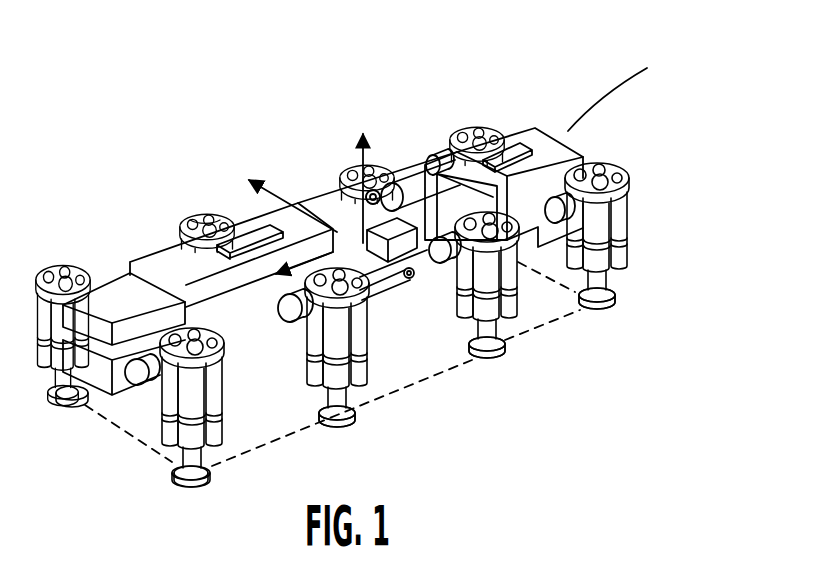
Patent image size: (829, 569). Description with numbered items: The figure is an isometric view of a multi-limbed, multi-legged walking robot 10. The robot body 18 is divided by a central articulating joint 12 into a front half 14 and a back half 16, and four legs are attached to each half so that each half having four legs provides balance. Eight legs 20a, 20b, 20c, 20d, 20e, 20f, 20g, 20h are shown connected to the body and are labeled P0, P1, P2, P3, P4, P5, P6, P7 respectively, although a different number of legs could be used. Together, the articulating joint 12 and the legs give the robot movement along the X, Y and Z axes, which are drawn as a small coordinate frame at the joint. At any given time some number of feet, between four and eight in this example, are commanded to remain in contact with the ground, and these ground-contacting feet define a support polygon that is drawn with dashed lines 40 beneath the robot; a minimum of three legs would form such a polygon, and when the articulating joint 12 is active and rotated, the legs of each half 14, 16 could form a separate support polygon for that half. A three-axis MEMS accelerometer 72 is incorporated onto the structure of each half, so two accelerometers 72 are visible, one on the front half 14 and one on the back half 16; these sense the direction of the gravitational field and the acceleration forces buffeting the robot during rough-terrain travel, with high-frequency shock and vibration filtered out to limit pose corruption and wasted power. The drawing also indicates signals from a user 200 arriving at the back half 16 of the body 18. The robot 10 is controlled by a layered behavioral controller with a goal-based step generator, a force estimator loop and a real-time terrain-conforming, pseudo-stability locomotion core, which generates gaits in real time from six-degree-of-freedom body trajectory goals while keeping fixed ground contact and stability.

The walking robot 10 is at (550, 74).
The central articulating joint 12 is at (414, 350).
The front half 14 is at (106, 260).
The back half 16 is at (603, 147).
The robot body 18 is at (541, 142).
The leg 20a is at (70, 400).
The leg 20b is at (177, 482).
The leg 20c is at (203, 217).
The leg 20d is at (333, 405).
The leg 20e is at (378, 194).
The leg 20f is at (481, 336).
The leg 20g is at (475, 127).
The leg 20h is at (589, 293).
The support polygon 40 is at (120, 432).
The three-axis MEMS accelerometer 72 is at (248, 240).
The signals from user 200 is at (619, 88).
The leg label P0 is at (60, 356).
The leg label P1 is at (184, 423).
The leg label P2 is at (192, 233).
The leg label P3 is at (344, 367).
The leg label P4 is at (353, 184).
The leg label P5 is at (494, 307).
The leg label P6 is at (465, 127).
The leg label P7 is at (603, 257).